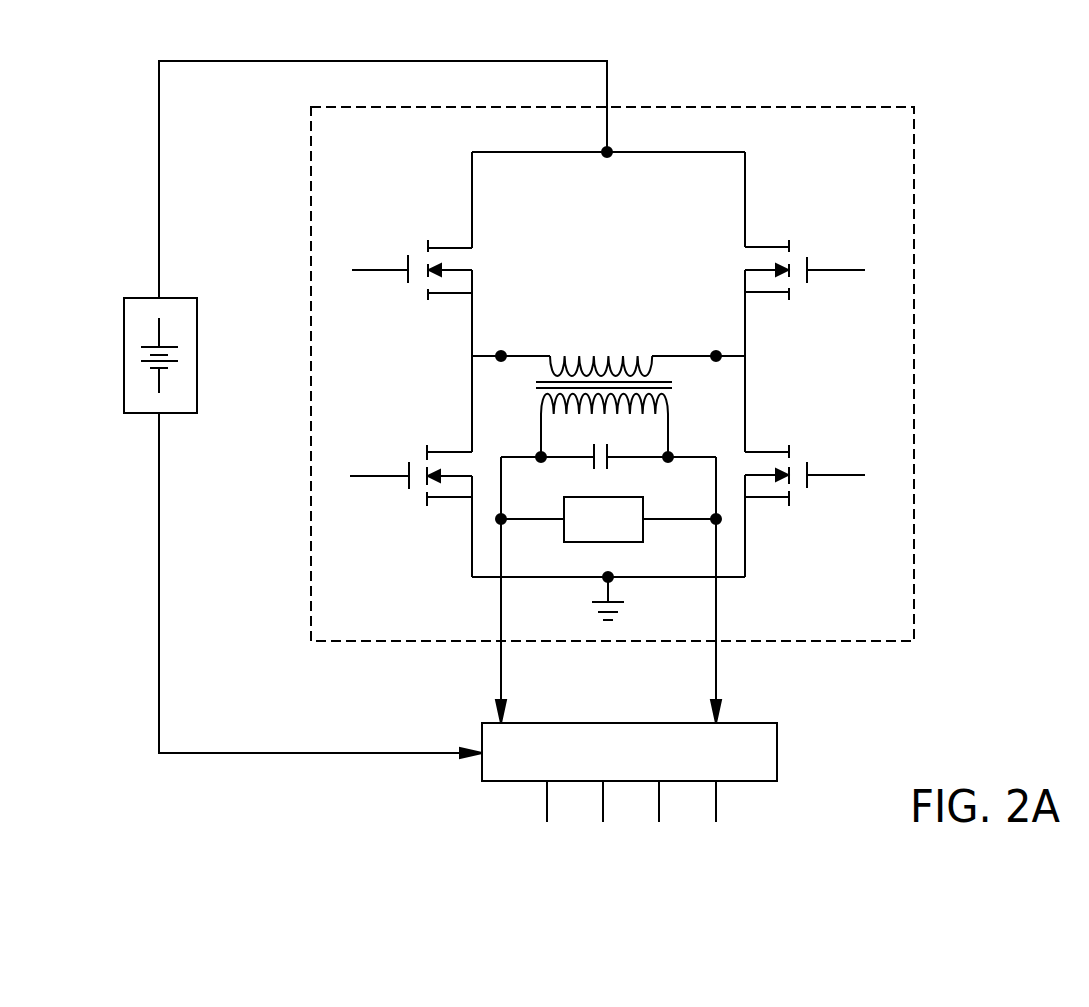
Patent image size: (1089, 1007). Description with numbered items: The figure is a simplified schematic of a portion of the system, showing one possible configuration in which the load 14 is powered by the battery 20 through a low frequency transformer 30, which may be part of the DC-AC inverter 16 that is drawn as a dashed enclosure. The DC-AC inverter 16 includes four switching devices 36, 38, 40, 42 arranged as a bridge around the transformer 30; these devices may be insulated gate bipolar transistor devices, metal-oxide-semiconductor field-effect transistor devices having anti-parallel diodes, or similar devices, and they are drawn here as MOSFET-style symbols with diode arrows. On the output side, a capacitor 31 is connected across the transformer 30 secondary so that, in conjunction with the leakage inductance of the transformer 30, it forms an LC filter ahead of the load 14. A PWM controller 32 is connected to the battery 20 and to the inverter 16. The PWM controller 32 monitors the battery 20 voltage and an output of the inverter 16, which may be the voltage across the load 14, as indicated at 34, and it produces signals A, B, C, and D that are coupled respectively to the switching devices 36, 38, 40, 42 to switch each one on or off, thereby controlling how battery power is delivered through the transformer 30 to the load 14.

The load 14 is at (626, 497).
The DC-AC inverter 16 is at (800, 107).
The battery 20 is at (197, 298).
The low frequency transformer 30 is at (672, 385).
The capacitor 31 is at (609, 450).
The PWM controller 32 is at (742, 723).
The output of the inverter 34 is at (716, 343).
The switching device 36 is at (408, 262).
The switching device 38 is at (409, 466).
The switching device 40 is at (807, 262).
The switching device 42 is at (807, 466).